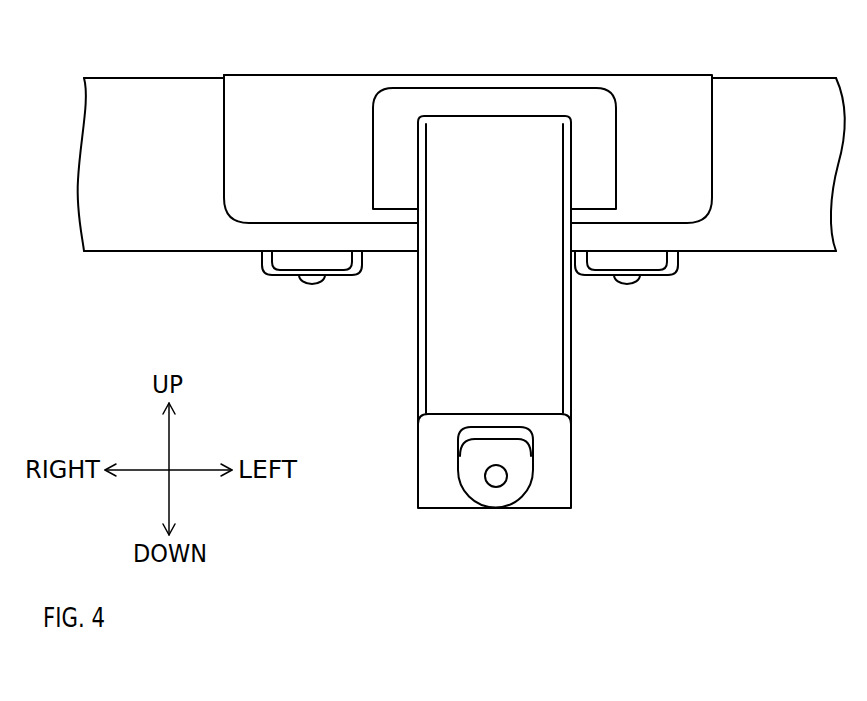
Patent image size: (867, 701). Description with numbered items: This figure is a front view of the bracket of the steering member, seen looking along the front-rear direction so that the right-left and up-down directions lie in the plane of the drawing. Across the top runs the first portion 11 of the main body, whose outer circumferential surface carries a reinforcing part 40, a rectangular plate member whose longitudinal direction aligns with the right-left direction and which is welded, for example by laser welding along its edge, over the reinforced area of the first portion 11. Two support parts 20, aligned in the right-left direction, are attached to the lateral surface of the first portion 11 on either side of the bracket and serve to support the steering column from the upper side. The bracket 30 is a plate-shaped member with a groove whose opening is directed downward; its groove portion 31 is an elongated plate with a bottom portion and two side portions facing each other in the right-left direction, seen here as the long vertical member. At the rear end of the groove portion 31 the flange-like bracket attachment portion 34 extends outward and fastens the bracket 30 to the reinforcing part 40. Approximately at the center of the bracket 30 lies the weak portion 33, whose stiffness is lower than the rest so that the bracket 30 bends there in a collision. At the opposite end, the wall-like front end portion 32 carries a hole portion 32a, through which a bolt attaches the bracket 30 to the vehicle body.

The first portion 11 is at (165, 110).
The reinforcing part 40 is at (311, 122).
The bracket attachment portion 34 is at (590, 113).
The bracket 30 is at (512, 349).
The groove portion 31 is at (440, 342).
The weak portion 33 is at (557, 261).
The front end portion 32 is at (543, 497).
The hole portion 32a is at (492, 483).
The support part 20 is at (283, 262).